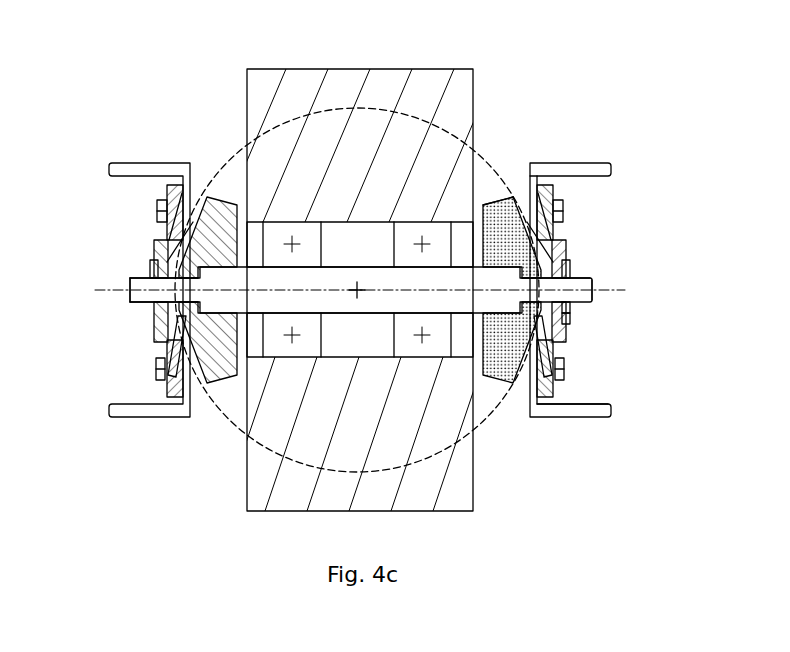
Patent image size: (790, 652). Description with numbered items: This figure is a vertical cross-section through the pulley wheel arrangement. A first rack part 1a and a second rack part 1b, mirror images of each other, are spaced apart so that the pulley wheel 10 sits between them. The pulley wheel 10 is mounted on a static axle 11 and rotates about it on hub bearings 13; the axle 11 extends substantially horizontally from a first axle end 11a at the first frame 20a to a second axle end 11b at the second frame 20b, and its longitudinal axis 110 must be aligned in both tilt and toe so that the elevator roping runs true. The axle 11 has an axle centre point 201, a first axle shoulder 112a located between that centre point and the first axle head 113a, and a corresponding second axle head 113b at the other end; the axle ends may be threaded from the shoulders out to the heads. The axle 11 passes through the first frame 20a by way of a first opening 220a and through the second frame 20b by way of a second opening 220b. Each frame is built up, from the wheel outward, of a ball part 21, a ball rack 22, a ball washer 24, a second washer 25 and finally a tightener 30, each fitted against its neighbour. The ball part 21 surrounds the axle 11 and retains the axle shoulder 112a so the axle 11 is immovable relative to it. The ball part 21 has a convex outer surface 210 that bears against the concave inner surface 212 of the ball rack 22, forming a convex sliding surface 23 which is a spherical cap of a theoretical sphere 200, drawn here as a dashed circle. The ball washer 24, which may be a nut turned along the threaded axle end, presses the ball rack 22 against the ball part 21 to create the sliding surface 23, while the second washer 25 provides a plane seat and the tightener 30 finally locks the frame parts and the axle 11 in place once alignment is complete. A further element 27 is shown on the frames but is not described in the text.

The first rack part 1a is at (563, 415).
The second rack part 1b is at (178, 417).
The pulley wheel 10 is at (292, 505).
The axle 11 is at (360, 290).
The first axle end 11a is at (593, 277).
The second axle end 11b is at (140, 278).
The longitudinal axis 110 is at (130, 287).
The first axle shoulder 112a is at (557, 351).
The first axle head 113a is at (593, 292).
The second axle head 113b is at (130, 292).
The hub bearings 13 is at (335, 268).
The first frame 20a is at (608, 182).
The second frame 20b is at (99, 196).
The theoretical sphere 200 is at (322, 108).
The axle centre point 201 is at (297, 222).
The ball part 21 is at (510, 196).
The ball rack 22 is at (536, 186).
The convex outer surface 210 is at (599, 170).
The concave inner surface 212 is at (560, 407).
The first opening 220a is at (566, 265).
The second opening 220b is at (165, 304).
The sliding surface 23 is at (566, 238).
The ball washer 24 is at (566, 332).
The second washer 25 is at (567, 318).
The screw 27 is at (562, 215).
The tightener 30 is at (567, 311).